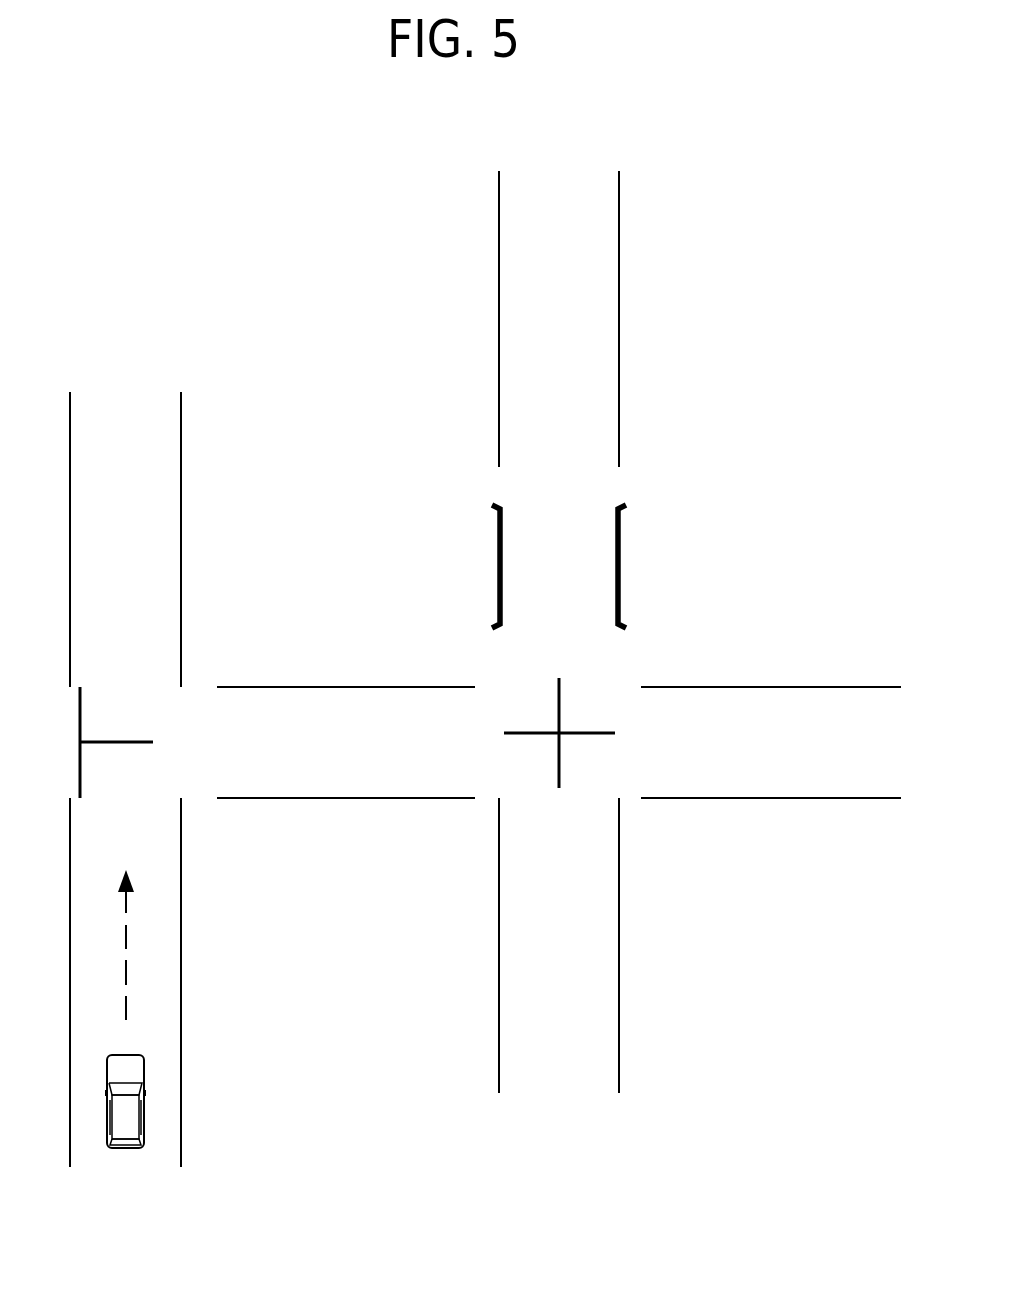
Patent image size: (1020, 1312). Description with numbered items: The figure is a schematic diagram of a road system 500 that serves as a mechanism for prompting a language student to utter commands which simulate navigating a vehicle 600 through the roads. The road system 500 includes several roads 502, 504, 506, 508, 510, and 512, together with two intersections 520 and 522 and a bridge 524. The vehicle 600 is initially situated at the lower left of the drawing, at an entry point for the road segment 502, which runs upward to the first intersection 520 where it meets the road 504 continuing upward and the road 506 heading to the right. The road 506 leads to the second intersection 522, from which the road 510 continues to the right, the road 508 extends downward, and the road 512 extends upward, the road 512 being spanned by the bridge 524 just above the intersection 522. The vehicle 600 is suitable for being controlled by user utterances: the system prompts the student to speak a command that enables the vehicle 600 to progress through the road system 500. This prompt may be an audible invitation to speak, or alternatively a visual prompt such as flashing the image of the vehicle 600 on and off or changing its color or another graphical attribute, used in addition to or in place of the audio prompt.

The road system 500 is at (222, 111).
The road segment 502 is at (154, 982).
The road 504 is at (125, 539).
The road 506 is at (346, 742).
The road 508 is at (559, 945).
The road 510 is at (771, 742).
The road 512 is at (559, 319).
The intersection 520 is at (90, 742).
The intersection 522 is at (559, 733).
The bridge 524 is at (582, 566).
The vehicle 600 is at (125, 1025).